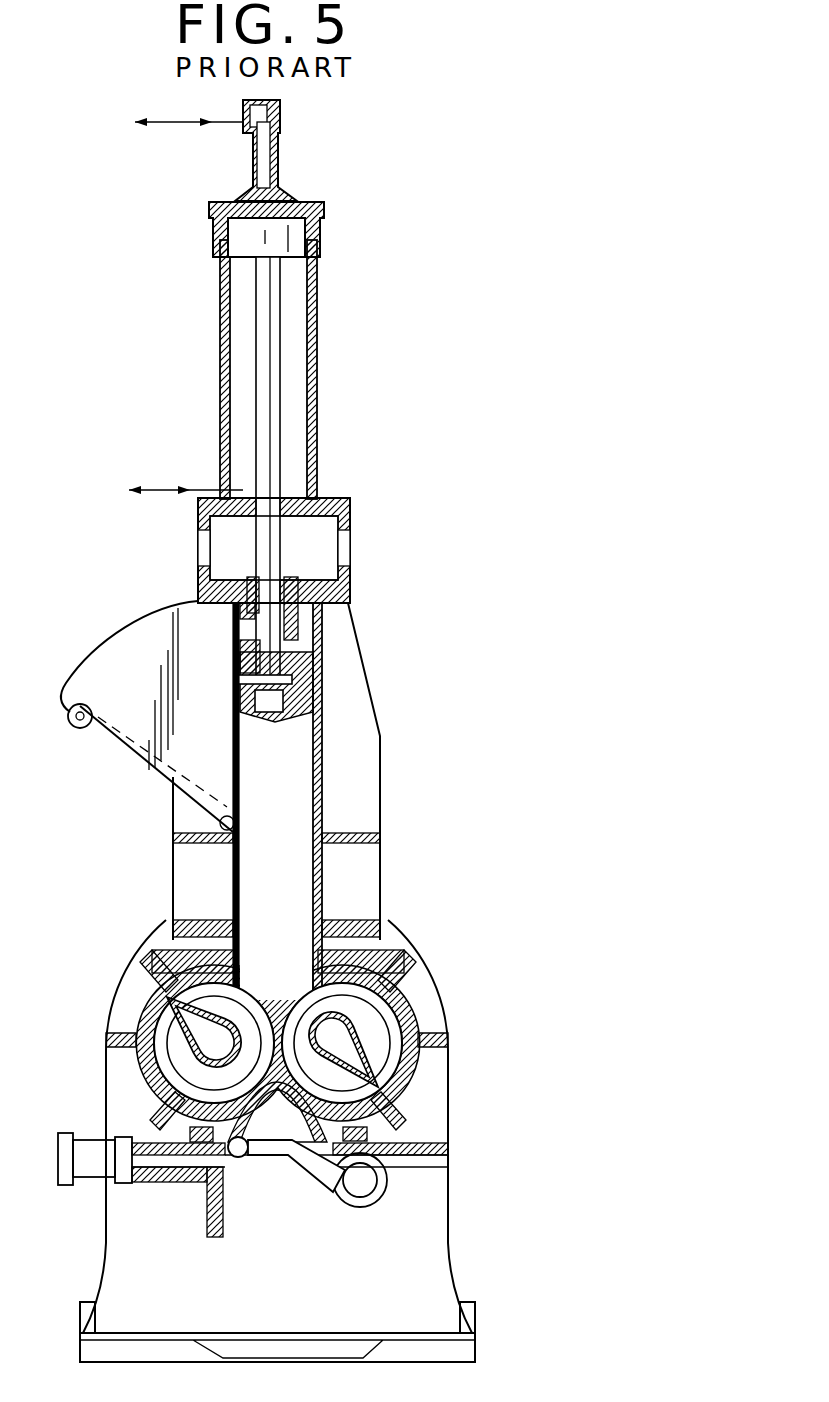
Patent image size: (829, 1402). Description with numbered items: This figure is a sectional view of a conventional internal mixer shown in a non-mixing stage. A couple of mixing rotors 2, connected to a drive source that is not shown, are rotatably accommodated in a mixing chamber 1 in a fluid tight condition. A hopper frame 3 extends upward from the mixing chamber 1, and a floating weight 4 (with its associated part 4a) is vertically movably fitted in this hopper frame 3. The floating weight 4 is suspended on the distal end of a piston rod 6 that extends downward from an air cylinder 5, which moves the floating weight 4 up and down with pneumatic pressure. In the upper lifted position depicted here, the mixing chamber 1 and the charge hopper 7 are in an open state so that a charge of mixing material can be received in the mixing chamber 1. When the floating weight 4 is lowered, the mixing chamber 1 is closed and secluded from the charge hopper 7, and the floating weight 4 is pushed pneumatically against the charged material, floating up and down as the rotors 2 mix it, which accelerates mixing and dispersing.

The mixing chamber 1 is at (420, 1002).
The mixing rotors 2 is at (200, 1012).
The hopper frame 3 is at (323, 777).
The floating weight 4 is at (323, 655).
The gland / packing 4a is at (254, 668).
The air cylinder 5 is at (222, 322).
The piston rod 6 is at (283, 385).
The charge hopper 7 is at (120, 644).